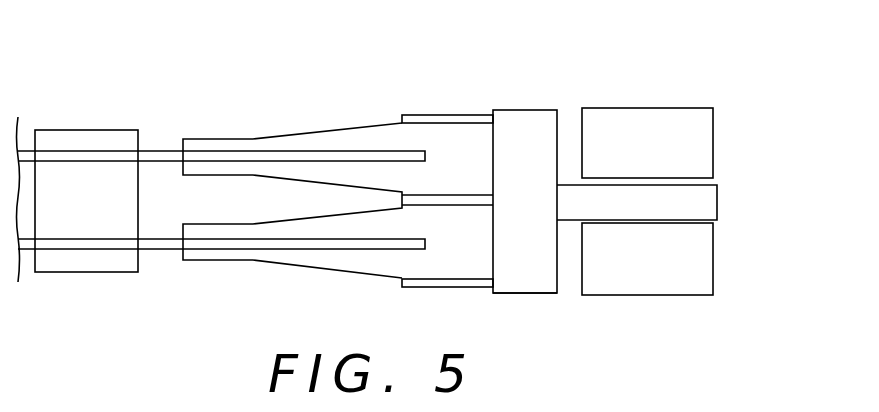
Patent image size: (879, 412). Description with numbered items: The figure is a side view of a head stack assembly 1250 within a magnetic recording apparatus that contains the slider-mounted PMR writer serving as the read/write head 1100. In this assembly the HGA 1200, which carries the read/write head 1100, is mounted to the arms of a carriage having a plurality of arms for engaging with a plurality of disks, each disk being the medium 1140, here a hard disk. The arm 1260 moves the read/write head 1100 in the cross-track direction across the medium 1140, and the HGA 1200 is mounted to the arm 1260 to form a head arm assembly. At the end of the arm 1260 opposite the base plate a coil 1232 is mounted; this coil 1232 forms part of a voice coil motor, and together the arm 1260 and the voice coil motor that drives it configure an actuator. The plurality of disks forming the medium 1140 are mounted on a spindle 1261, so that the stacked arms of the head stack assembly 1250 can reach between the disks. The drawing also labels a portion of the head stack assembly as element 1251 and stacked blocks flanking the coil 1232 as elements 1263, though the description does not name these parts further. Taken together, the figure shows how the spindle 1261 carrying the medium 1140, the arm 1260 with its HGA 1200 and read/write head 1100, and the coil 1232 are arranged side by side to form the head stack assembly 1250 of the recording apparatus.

The read/write head 1100 is at (183, 137).
The medium 1140 is at (153, 150).
The HGA 1200 is at (275, 143).
The head stack assembly 1250 is at (532, 85).
The holder lower portion 1251 is at (525, 278).
The arm 1260 is at (413, 115).
The spindle 1261 is at (75, 143).
The clamp block 1263 is at (649, 123).
The coil 1232 is at (708, 200).